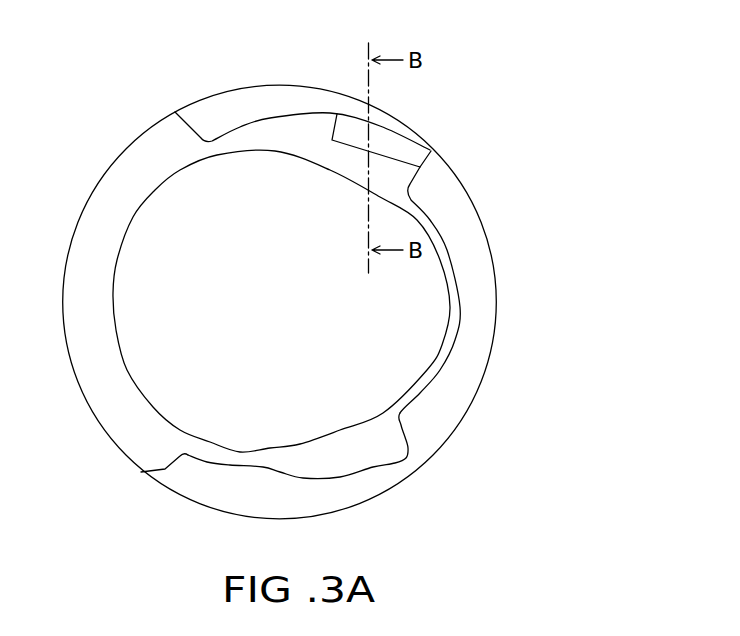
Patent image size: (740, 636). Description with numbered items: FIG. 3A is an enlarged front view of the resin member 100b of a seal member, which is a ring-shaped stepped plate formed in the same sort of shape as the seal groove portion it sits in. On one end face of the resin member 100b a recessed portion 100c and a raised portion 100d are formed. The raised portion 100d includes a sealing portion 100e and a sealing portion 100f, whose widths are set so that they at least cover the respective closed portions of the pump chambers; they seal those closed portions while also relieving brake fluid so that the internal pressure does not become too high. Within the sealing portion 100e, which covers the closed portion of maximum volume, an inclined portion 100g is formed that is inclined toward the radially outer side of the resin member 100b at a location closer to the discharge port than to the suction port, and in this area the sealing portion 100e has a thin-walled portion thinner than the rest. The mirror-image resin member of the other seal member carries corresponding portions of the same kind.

The resin member 100b is at (125, 139).
The recessed portion 100c is at (457, 380).
The raised portion 100d is at (105, 398).
The sealing portion 100e is at (260, 133).
The sealing portion 100f is at (358, 458).
The inclined portion 100g is at (400, 143).